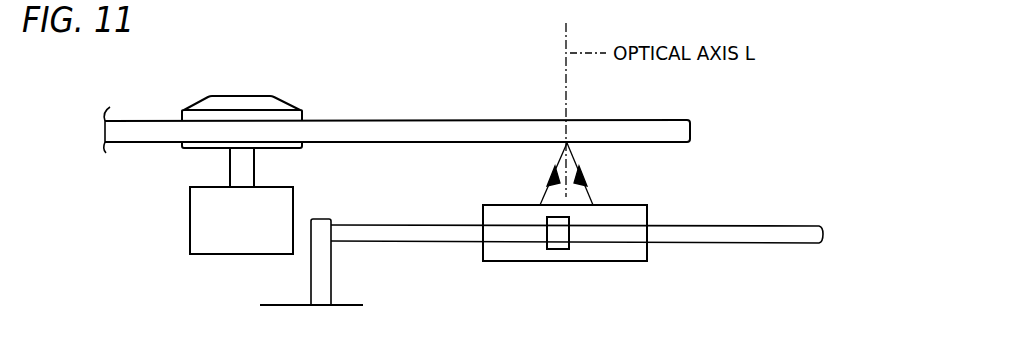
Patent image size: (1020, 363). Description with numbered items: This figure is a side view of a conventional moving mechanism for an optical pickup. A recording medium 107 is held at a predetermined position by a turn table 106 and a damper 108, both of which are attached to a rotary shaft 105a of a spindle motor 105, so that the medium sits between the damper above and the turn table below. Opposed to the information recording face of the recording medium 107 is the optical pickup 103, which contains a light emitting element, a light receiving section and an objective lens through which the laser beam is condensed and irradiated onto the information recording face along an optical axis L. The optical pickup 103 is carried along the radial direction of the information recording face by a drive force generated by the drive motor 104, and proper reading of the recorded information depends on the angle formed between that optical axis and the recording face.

The optical pickup 103 is at (602, 261).
The drive motor 104 is at (572, 154).
The spindle motor 105 is at (198, 218).
The rotary shaft 105a is at (233, 166).
The turn table 106 is at (277, 148).
The recording medium 107 is at (457, 124).
The damper 108 is at (240, 96).